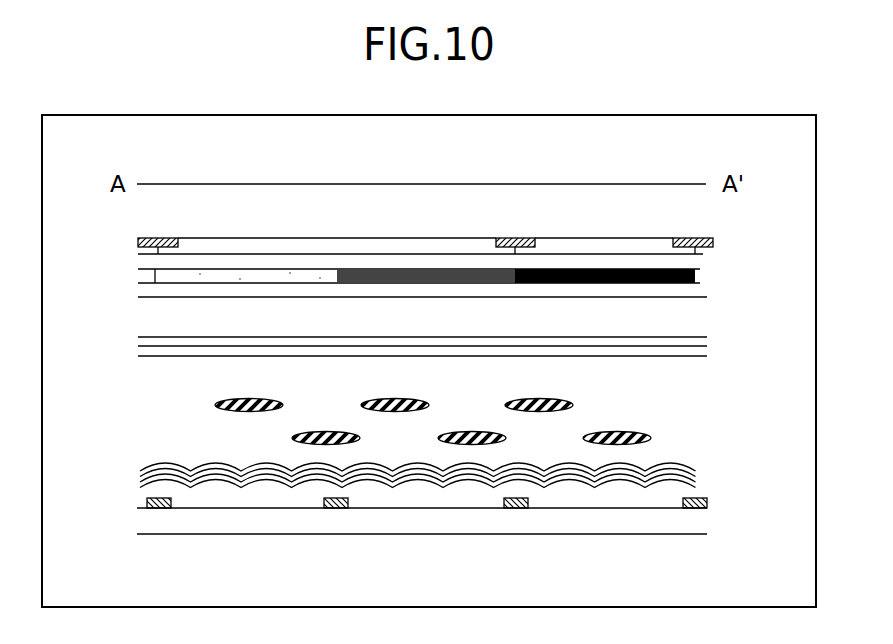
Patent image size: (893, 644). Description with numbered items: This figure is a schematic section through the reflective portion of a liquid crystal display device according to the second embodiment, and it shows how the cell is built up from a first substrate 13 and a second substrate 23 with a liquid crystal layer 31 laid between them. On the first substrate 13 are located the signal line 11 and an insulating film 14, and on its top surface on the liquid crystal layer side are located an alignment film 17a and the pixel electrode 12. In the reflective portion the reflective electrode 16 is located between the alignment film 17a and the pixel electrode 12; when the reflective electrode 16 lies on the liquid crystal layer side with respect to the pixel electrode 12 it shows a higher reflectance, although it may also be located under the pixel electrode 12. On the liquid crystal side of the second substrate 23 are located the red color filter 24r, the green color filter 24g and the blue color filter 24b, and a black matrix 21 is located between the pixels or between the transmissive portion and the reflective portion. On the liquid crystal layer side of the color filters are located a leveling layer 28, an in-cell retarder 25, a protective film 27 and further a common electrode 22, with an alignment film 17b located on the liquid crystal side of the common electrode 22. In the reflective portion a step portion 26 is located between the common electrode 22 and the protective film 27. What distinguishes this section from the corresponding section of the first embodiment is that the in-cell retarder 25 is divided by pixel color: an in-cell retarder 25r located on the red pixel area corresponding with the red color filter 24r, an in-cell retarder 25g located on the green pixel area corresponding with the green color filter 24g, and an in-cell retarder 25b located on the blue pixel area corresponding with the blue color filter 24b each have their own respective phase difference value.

The signal line 11 is at (334, 511).
The pixel electrode 12 is at (690, 484).
The first substrate 13 is at (204, 527).
The insulating film 14 is at (602, 498).
The reflective electrode 16 is at (148, 481).
The alignment film 17a is at (690, 472).
The alignment film 17b is at (698, 351).
The black matrix 21 is at (160, 240).
The common electrode 22 is at (143, 343).
The second substrate 23 is at (508, 190).
The red color filter 24r is at (275, 244).
The green color filter 24g is at (455, 244).
The blue color filter 24b is at (630, 244).
The in-cell retarder 25 is at (697, 275).
The in-cell retarder 25r is at (240, 280).
The in-cell retarder 25g is at (417, 276).
The in-cell retarder 25b is at (595, 268).
The step portion 26 is at (146, 318).
The protective film 27 is at (697, 290).
The leveling layer 28 is at (697, 264).
The liquid crystal layer 31 is at (614, 433).